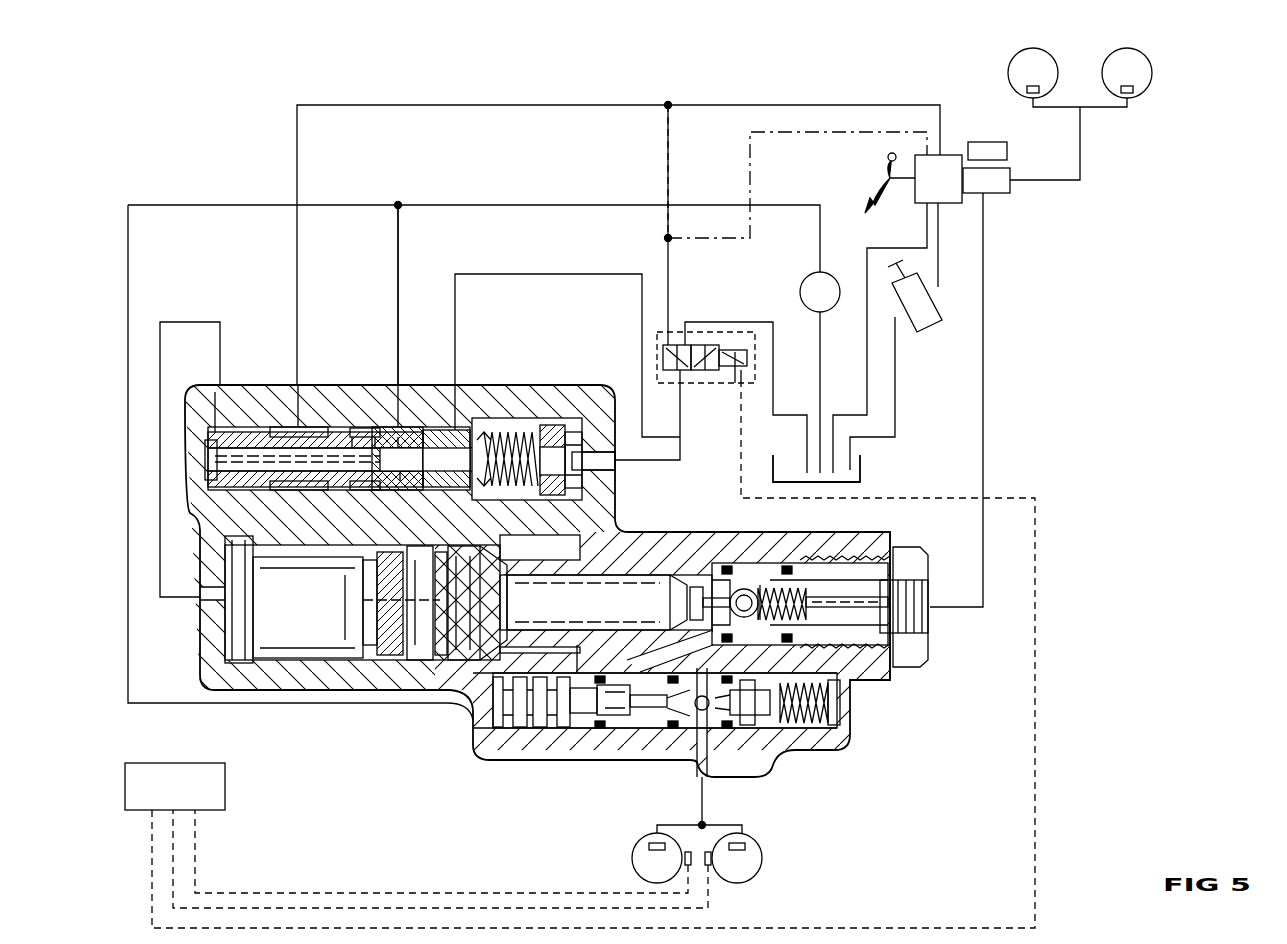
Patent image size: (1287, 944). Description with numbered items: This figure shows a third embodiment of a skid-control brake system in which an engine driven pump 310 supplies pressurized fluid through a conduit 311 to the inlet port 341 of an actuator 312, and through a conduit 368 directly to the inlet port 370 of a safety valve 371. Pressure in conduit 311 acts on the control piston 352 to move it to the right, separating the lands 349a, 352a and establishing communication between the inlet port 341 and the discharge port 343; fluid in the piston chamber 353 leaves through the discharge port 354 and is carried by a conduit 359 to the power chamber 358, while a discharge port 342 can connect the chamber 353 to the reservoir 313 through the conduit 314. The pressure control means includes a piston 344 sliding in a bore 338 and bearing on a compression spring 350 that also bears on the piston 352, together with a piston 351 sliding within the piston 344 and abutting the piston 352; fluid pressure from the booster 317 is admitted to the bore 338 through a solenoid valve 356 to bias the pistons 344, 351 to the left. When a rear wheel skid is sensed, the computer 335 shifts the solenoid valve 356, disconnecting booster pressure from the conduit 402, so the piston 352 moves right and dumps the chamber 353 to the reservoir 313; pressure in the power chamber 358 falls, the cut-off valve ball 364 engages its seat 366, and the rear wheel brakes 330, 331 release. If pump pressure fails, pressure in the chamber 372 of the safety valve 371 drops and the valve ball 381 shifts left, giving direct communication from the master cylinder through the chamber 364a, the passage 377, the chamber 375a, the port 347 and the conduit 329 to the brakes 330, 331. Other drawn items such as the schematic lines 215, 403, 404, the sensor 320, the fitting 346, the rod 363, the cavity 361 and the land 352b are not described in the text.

The conduit 215 is at (520, 105).
The conduit 311 is at (398, 280).
The conduit 314 is at (540, 274).
The booster 317 is at (943, 158).
The conduit 359 is at (178, 322).
The land 352a is at (380, 430).
The land 349a is at (362, 450).
The passage 352b is at (435, 430).
The bore 338 is at (503, 420).
The discharge port 354 is at (218, 430).
The piston chamber 353 is at (270, 430).
The discharge port 343 is at (300, 427).
The control piston 352 is at (342, 428).
The inlet port 341 is at (405, 427).
The discharge port 342 is at (457, 430).
The compression spring 350 is at (520, 425).
The piston 344 is at (558, 432).
The piston 351 is at (585, 445).
The electrical line 403 is at (672, 255).
The solenoid valve 356 is at (710, 345).
The conduit 404 is at (770, 362).
The engine driven pump 310 is at (822, 315).
The sensor 320 is at (925, 325).
The reservoir 313 is at (860, 465).
The conduit 402 is at (636, 465).
The actuator 312 is at (658, 512).
The cut-off valve ball 364 is at (746, 592).
The chamber 364a is at (785, 590).
The seat 366 is at (880, 600).
The nut 346 is at (930, 625).
The passage 377 is at (850, 690).
The chamber 375a is at (820, 757).
The conduit 368 is at (128, 560).
The power chamber 358 is at (366, 599).
The rod 363 is at (618, 602).
The cavity 361 is at (420, 650).
The inlet port 370 is at (470, 715).
The chamber 372 is at (500, 740).
The safety valve 371 is at (575, 775).
The valve ball 381 is at (690, 735).
The conduit 329 is at (700, 806).
The port 347 is at (708, 765).
The rear wheel brake 330 is at (640, 852).
The rear wheel brake 331 is at (760, 850).
The computer 335 is at (196, 763).